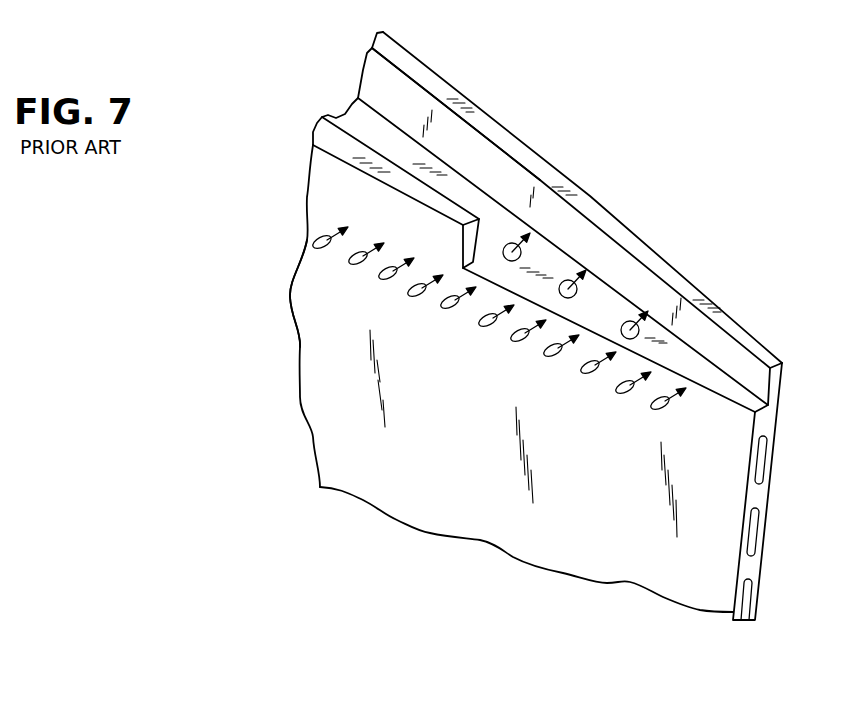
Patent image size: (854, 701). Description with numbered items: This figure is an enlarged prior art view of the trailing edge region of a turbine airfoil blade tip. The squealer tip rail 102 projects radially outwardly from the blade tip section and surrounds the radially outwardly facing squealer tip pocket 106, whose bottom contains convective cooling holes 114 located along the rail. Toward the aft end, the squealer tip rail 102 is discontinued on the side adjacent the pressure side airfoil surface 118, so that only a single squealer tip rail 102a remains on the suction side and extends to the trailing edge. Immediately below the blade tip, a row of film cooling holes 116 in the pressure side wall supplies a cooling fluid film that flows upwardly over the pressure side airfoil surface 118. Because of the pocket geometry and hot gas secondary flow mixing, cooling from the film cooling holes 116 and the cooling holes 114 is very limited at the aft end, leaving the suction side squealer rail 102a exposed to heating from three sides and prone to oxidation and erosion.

The squealer tip rail 102 is at (350, 140).
The single squealer tip rail 102a is at (690, 287).
The squealer tip pocket 106 is at (460, 192).
The convective cooling holes 114 is at (521, 253).
The film cooling holes 116 is at (518, 338).
The pressure side airfoil surface 118 is at (335, 307).